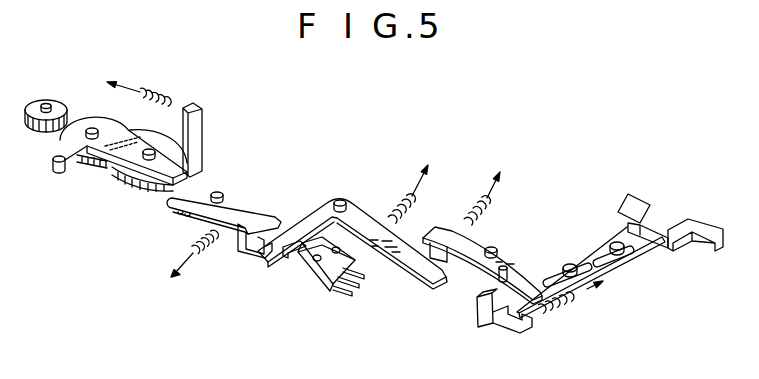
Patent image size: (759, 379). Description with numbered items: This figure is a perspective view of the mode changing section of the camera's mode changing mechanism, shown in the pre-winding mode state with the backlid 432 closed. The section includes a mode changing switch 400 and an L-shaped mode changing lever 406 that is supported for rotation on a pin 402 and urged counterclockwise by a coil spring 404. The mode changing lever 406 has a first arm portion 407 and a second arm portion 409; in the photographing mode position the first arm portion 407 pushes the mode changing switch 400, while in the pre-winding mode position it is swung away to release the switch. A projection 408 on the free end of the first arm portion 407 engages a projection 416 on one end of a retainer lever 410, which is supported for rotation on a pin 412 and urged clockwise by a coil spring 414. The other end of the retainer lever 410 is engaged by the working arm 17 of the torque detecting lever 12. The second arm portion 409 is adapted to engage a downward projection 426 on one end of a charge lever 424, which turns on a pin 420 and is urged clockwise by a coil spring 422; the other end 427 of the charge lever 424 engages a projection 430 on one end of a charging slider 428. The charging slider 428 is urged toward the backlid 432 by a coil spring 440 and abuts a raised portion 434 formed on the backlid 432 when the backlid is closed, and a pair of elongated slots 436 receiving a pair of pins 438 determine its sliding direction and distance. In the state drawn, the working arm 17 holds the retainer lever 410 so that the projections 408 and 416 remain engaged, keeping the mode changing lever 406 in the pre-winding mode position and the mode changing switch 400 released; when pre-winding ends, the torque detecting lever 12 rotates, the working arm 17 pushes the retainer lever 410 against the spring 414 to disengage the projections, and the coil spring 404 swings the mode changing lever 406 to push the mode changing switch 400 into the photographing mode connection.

The torque detecting lever 12 is at (118, 178).
The working arm 17 is at (160, 185).
The mode changing switch 400 is at (307, 287).
The pin 402 is at (378, 242).
The coil spring 404 is at (393, 210).
The mode changing lever 406 is at (319, 195).
The first arm portion 407 is at (283, 237).
The projection 408 is at (238, 233).
The second arm portion 409 is at (407, 260).
The retainer lever 410 is at (199, 196).
The pin 412 is at (220, 193).
The coil spring 414 is at (203, 230).
The projection 416 is at (268, 210).
The pin 420 is at (503, 243).
The coil spring 422 is at (473, 203).
The charge lever 424 is at (476, 274).
The downward projection 426 is at (453, 257).
The other end 427 is at (530, 287).
The charging slider 428 is at (586, 247).
The projection 430 is at (483, 317).
The backlid 432 is at (710, 227).
The raised portion 434 is at (660, 220).
The elongated slots 436 is at (580, 283).
The pins 438 is at (593, 267).
The coil spring 440 is at (553, 317).